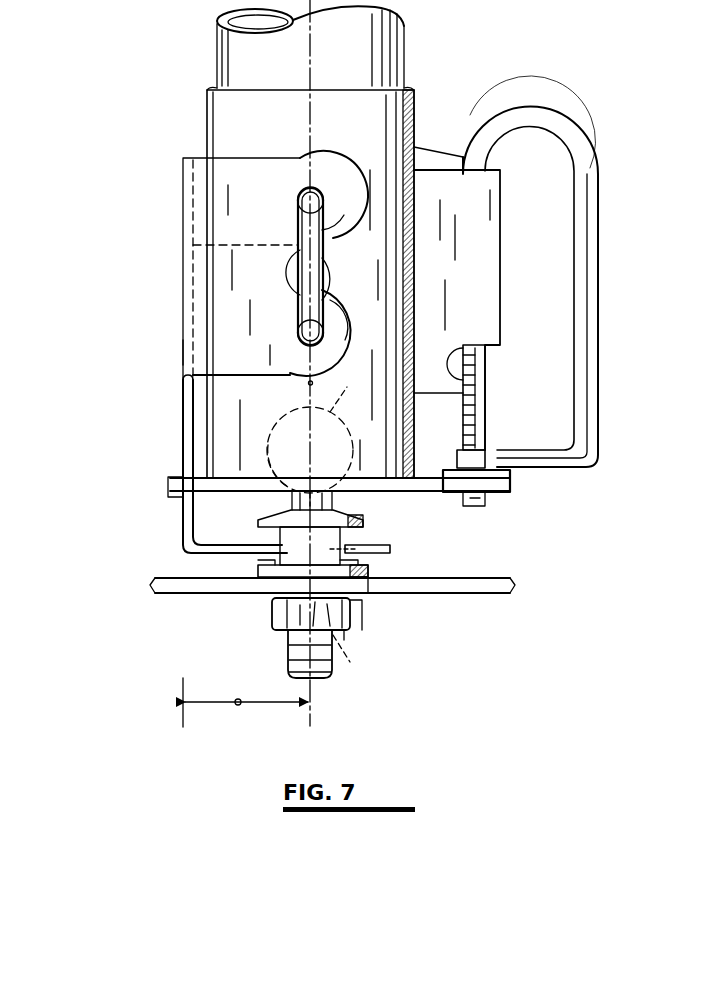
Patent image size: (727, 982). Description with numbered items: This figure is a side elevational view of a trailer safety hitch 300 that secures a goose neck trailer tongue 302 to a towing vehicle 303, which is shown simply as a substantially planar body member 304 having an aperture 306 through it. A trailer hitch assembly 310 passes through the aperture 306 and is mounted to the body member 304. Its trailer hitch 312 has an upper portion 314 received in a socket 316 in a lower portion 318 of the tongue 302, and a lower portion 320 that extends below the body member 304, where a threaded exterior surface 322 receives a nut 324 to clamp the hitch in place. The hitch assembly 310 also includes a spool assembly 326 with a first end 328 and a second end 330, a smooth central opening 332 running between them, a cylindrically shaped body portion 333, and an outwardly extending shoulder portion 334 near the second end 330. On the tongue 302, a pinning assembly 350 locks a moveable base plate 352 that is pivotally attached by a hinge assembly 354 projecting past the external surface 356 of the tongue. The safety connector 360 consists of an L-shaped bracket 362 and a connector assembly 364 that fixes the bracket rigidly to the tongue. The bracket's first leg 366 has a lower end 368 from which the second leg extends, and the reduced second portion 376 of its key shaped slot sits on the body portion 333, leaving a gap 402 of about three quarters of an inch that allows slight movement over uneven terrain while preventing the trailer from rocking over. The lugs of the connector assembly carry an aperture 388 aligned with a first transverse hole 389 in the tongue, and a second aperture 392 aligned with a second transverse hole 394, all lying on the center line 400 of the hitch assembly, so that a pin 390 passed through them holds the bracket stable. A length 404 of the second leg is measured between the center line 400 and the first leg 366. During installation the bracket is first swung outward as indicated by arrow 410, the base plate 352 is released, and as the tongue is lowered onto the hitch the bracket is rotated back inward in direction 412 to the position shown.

The trailer safety hitch 300 is at (115, 172).
The goose neck trailer tongue 302 is at (203, 102).
The towing vehicle 303 is at (163, 598).
The body member 304 is at (187, 594).
The aperture 306 is at (365, 658).
The trailer hitch assembly 310 is at (334, 450).
The trailer hitch 312 is at (268, 444).
The upper portion 314 is at (285, 518).
The socket 316 is at (362, 391).
The lower portion 318 is at (440, 433).
The lower portion 320 is at (332, 665).
The threaded exterior surface 322 is at (288, 650).
The nut 324 is at (272, 612).
The spool assembly 326 is at (375, 572).
The first end 328 is at (383, 462).
The second end 330 is at (372, 582).
The central opening 332 is at (290, 556).
The cylindrically shaped body portion 333 is at (280, 540).
The outwardly extending shoulder portion 334 is at (370, 578).
The pinning assembly 350 is at (505, 272).
The moveable base plate 352 is at (497, 498).
The hinge assembly 354 is at (170, 489).
The external surface 356 is at (207, 135).
The safety connector 360 is at (176, 240).
The L-shaped bracket 362 is at (183, 352).
The connector assembly 364 is at (284, 153).
The first leg 366 is at (183, 403).
The lower end 368 is at (183, 553).
The reduced second portion 376 is at (350, 545).
The aperture 388 is at (336, 217).
The first transverse hole 389 is at (311, 190).
The pin 390 is at (333, 278).
The second aperture 392 is at (338, 348).
The second transverse hole 394 is at (333, 312).
The center line 400 is at (310, 384).
The gap 402 is at (374, 566).
The length 404 is at (238, 705).
The arrow 410 is at (22, 437).
The direction 412 is at (105, 378).